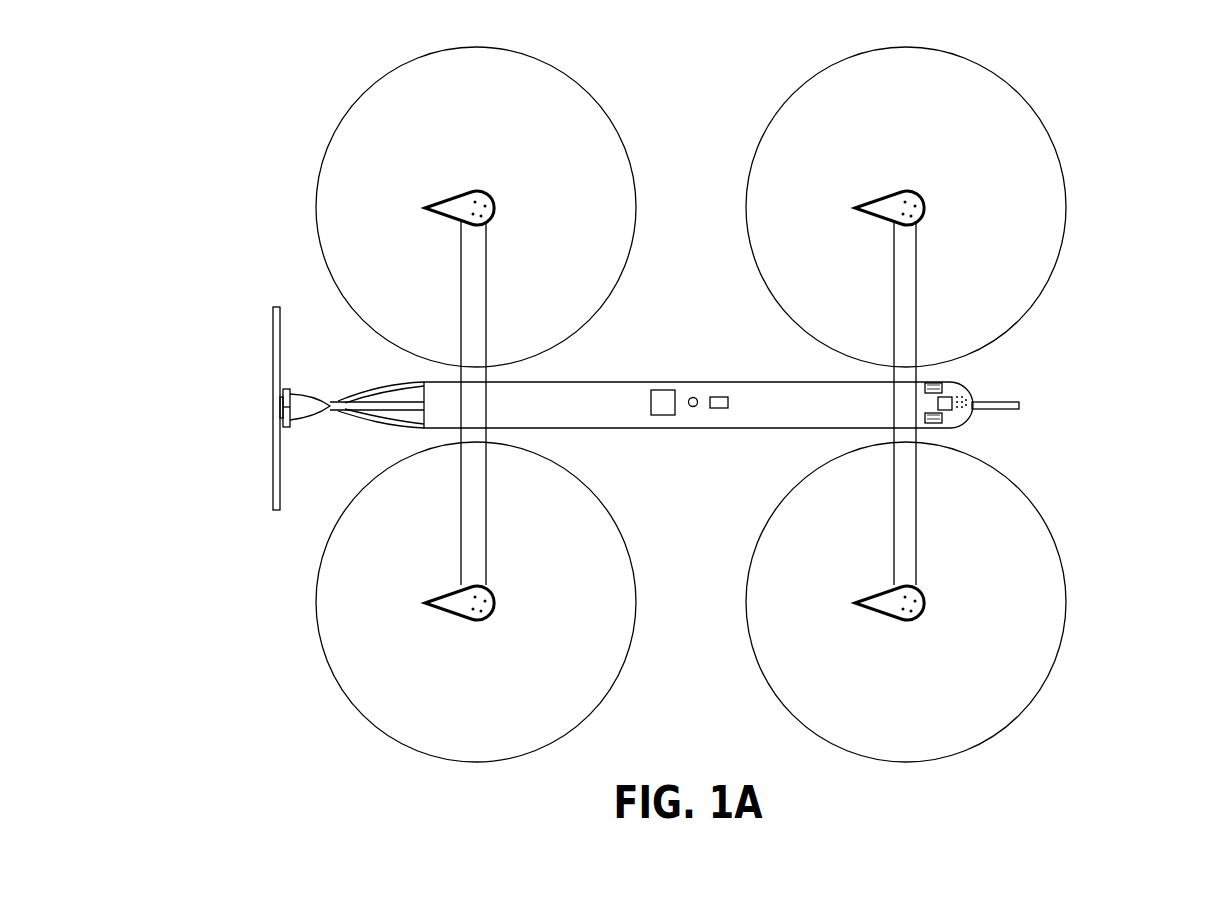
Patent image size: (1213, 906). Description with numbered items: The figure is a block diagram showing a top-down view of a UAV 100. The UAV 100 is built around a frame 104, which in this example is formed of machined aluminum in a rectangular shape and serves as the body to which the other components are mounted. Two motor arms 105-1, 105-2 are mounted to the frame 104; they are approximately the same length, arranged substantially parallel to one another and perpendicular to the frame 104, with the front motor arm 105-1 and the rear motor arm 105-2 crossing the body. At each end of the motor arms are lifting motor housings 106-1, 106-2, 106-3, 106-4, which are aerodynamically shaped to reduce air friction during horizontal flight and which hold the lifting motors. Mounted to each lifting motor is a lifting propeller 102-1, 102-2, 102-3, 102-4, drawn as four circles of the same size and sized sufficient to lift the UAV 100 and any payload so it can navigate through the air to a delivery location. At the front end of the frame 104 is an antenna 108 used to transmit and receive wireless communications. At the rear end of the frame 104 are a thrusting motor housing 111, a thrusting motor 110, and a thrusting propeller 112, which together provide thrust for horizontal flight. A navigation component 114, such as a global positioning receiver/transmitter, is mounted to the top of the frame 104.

The UAV 100 is at (1106, 98).
The lifting propeller 102-1 is at (965, 90).
The lifting propeller 102-2 is at (1022, 518).
The lifting propeller 102-3 is at (345, 648).
The lifting propeller 102-4 is at (533, 90).
The frame 104 is at (767, 395).
The motor arm 105-1 is at (905, 290).
The motor arm 105-2 is at (475, 290).
The lifting motor housing 106-1 is at (882, 193).
The lifting motor housing 106-2 is at (888, 608).
The lifting motor housing 106-3 is at (457, 613).
The lifting motor housing 106-4 is at (450, 193).
The antenna 108 is at (1013, 402).
The thrusting motor 110 is at (283, 408).
The thrusting motor housing 111 is at (307, 390).
The thrusting propeller 112 is at (270, 483).
The navigation component 114 is at (667, 415).